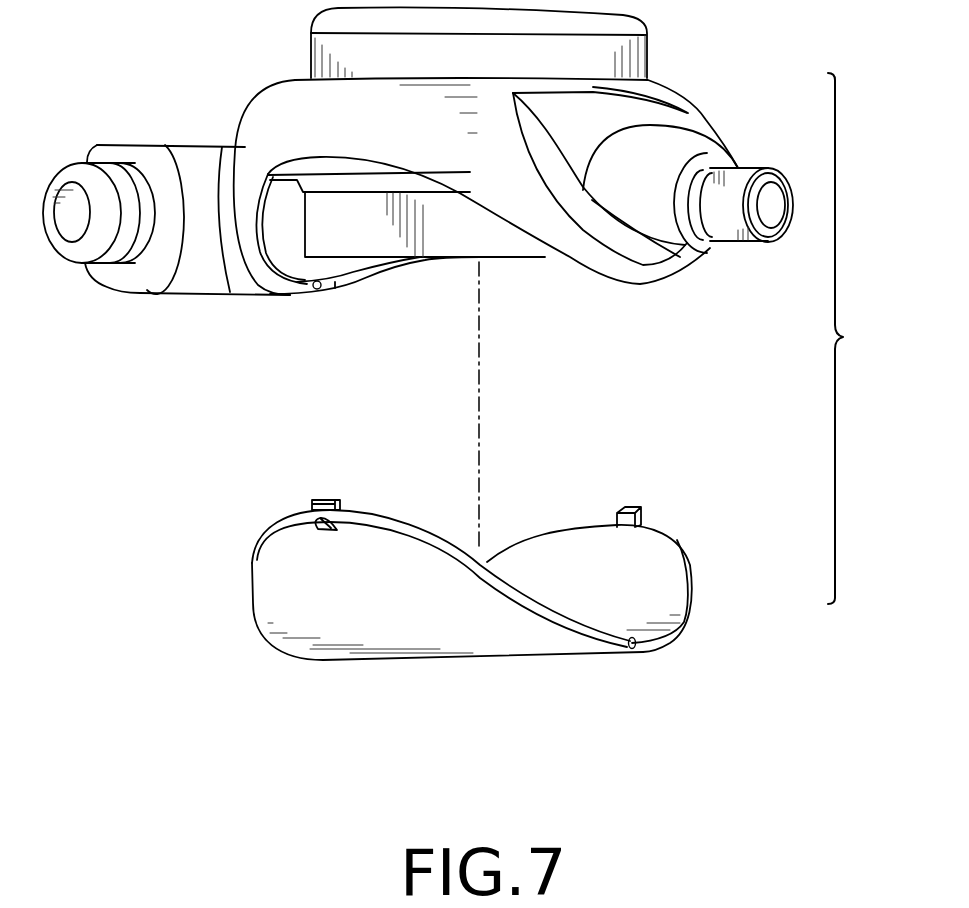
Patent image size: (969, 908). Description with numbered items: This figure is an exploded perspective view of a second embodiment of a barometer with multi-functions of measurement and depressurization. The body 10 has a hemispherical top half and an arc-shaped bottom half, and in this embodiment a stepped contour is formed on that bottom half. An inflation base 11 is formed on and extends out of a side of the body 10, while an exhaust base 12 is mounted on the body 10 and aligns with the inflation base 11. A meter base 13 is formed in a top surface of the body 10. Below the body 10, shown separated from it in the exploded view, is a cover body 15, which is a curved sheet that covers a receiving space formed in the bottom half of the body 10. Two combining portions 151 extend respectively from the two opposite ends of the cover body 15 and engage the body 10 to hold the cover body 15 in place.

The body 10 is at (305, 95).
The inflation base 11 is at (677, 146).
The exhaust base 12 is at (197, 151).
The meter base 13 is at (360, 182).
The cover body 15 is at (497, 648).
The combining portions 151 is at (326, 500).